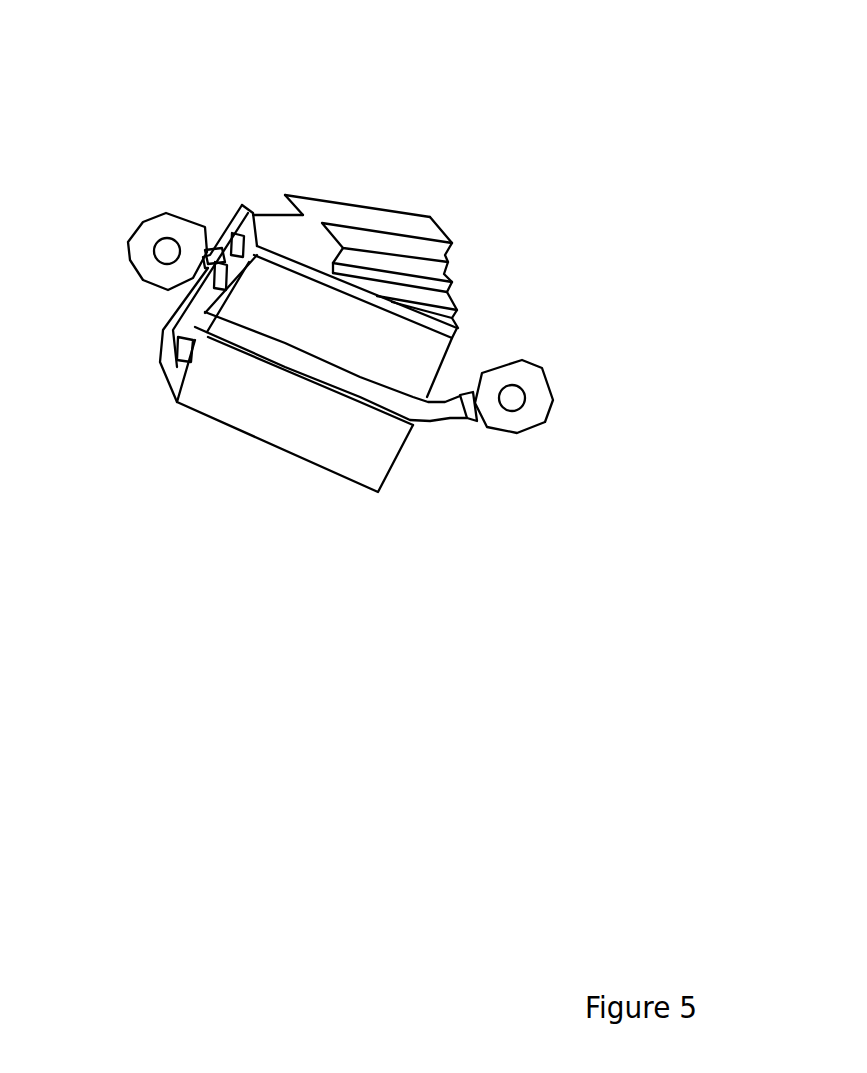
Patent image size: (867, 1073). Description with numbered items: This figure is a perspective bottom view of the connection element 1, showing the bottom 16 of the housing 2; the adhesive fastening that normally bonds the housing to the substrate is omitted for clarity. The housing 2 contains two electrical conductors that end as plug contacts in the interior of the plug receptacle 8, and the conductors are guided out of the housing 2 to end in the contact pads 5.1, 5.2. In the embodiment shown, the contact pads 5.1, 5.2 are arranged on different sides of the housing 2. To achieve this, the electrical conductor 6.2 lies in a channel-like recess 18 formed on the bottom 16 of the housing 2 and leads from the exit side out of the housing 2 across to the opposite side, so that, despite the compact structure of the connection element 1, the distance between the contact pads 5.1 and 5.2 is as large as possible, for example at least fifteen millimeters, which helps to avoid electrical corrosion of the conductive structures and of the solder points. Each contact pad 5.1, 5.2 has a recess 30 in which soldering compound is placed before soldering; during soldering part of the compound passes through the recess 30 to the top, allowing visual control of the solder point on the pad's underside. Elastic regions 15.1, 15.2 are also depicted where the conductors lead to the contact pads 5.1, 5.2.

The connection element 1 is at (235, 126).
The housing 2 is at (326, 199).
The plug receptacle 8 is at (506, 270).
The contact pad 5.1 is at (157, 212).
The contact pad 5.2 is at (547, 422).
The recess in the contact pad 30 is at (167, 257).
The elastic region 15.1 is at (208, 272).
The elastic region 15.2 is at (463, 420).
The recess on the bottom of the housing 18 is at (240, 352).
The bottom of the housing 16 is at (239, 424).
The electrical conductor 6.2 is at (313, 370).